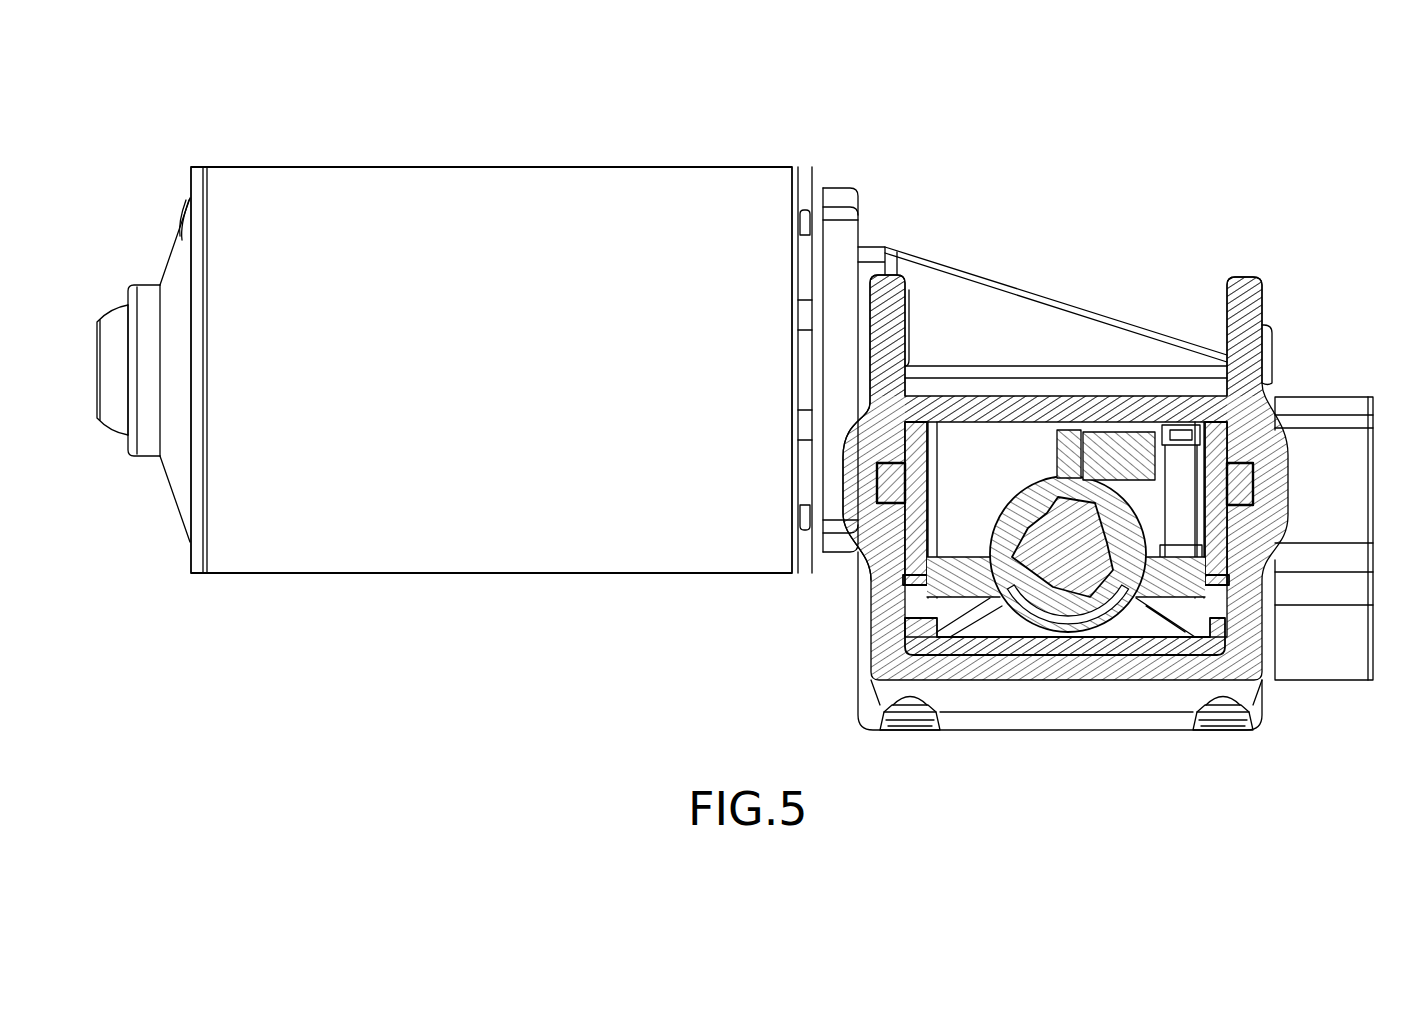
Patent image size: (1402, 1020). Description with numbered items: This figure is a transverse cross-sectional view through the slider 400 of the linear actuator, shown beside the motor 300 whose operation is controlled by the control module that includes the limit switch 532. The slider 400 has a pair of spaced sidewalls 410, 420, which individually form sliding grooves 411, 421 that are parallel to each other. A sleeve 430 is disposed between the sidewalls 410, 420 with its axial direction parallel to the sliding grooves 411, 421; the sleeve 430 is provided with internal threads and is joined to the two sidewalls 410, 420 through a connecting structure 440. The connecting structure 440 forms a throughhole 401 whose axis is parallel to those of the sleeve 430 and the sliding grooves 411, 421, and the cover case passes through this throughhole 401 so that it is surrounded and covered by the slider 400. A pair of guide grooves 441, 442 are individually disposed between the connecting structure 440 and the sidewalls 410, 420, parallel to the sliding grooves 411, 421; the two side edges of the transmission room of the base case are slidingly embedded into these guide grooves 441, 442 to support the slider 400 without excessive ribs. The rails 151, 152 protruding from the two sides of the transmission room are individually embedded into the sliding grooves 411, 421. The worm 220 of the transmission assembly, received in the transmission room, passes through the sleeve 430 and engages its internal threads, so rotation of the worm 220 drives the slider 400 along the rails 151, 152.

The motor 300 is at (468, 160).
The slider 400 is at (1083, 687).
The throughhole 401 is at (1210, 625).
The sidewall 410 is at (1240, 300).
The sliding groove 411 is at (1253, 480).
The sidewall 420 is at (886, 300).
The sliding groove 421 is at (845, 500).
The sleeve 430 is at (1065, 625).
The connecting structure 440 is at (905, 572).
The guide groove 441 is at (1217, 582).
The guide groove 442 is at (913, 586).
The rail 151 is at (1237, 450).
The rail 152 is at (1070, 410).
The worm 220 is at (1060, 545).
The limit switch 532 is at (1125, 455).